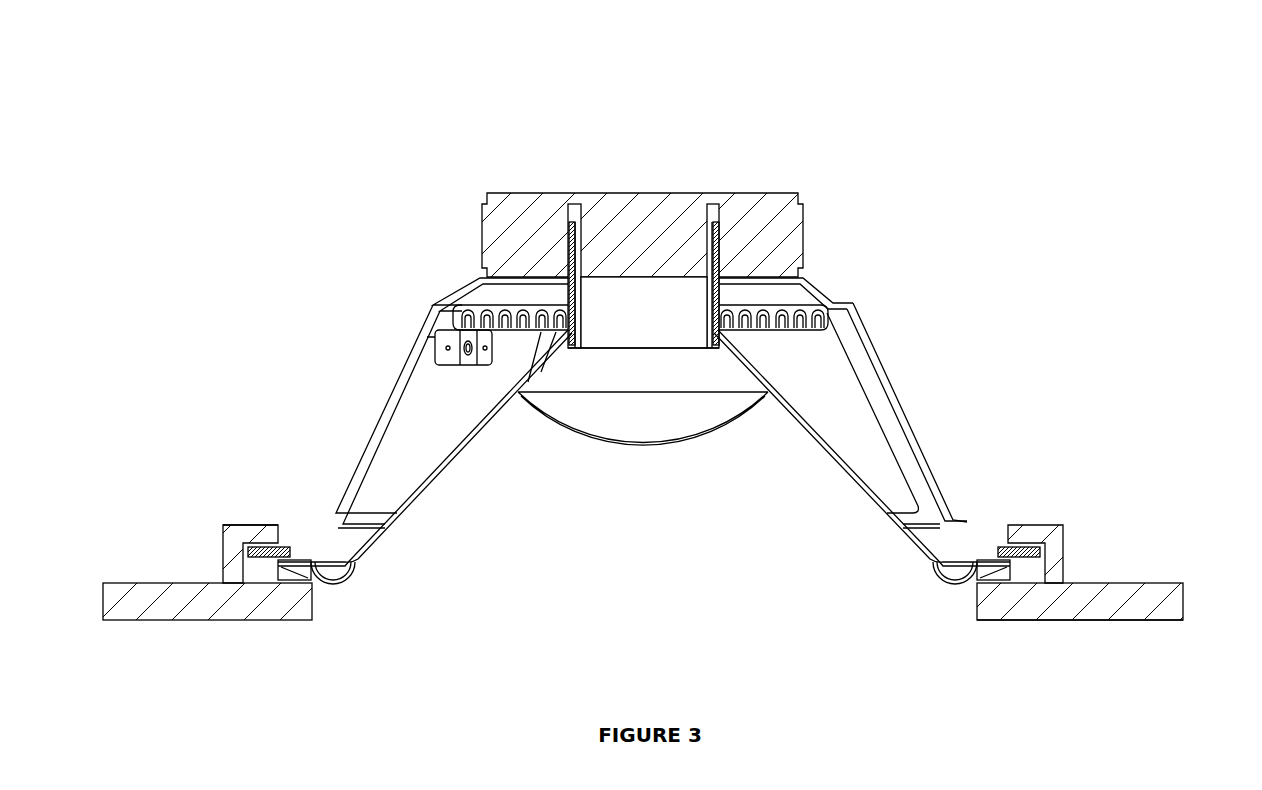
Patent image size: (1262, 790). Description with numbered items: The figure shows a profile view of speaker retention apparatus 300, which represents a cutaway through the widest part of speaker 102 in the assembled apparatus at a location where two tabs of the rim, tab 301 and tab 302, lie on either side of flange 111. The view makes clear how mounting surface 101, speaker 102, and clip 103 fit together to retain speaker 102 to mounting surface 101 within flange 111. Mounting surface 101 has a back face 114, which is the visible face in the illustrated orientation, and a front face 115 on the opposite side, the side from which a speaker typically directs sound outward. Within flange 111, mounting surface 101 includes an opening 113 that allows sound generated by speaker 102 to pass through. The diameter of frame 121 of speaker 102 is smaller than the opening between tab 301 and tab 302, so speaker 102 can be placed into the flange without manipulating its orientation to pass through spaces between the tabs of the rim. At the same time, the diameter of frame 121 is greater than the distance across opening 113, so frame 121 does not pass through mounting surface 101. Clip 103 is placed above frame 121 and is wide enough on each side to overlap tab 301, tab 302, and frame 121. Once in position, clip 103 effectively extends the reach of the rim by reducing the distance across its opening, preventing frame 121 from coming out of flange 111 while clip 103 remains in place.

The speaker retention apparatus 300 is at (128, 64).
The mounting surface 101 is at (118, 583).
The speaker 102 is at (633, 325).
The clip 103 is at (286, 547).
The flange 111 is at (223, 546).
The opening 113 is at (625, 618).
The back face 114 is at (1158, 557).
The front face 115 is at (1153, 661).
The frame 121 is at (995, 560).
The tab 301 is at (267, 524).
The tab 302 is at (1028, 525).